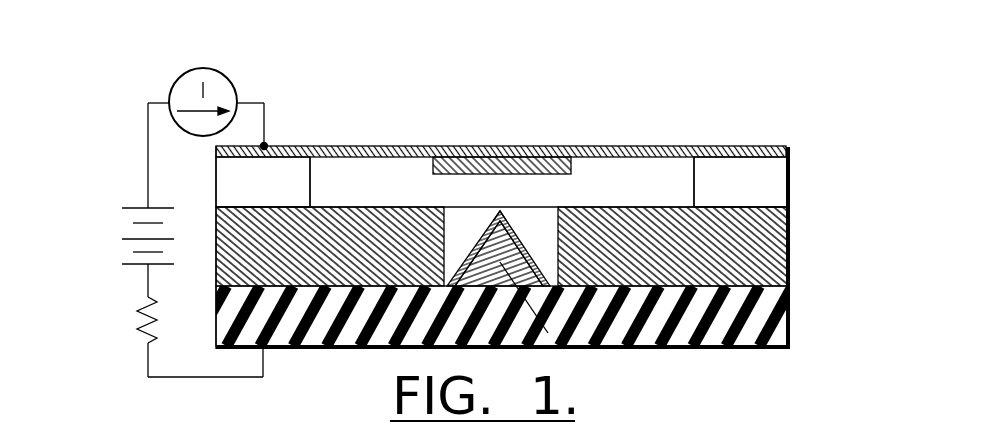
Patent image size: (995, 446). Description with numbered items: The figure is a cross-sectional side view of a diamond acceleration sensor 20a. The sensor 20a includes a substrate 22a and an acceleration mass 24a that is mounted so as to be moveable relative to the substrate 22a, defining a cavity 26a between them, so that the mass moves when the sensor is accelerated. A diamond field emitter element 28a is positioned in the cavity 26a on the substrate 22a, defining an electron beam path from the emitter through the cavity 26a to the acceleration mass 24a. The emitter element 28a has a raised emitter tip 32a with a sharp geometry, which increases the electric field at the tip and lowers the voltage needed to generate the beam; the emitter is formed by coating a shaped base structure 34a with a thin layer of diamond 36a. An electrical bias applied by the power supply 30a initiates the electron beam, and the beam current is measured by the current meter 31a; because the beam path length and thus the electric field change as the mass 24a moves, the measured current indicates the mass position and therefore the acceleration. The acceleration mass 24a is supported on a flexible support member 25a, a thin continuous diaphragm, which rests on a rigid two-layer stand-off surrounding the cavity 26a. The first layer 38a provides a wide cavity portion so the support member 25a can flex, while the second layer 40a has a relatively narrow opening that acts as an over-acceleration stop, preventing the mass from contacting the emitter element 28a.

The acceleration sensor 20a is at (436, 113).
The substrate 22a is at (772, 316).
The acceleration mass 24a is at (545, 163).
The flexible support member 25a is at (642, 146).
The cavity 26a is at (502, 157).
The diamond field emitter element 28a is at (515, 232).
The power supply 30a is at (128, 224).
The current meter 31a is at (178, 80).
The raised emitter tip 32a is at (502, 212).
The base structure 34a is at (560, 349).
The thin layer of diamond 36a is at (482, 233).
The first layer 38a is at (222, 193).
The second layer 40a is at (217, 269).